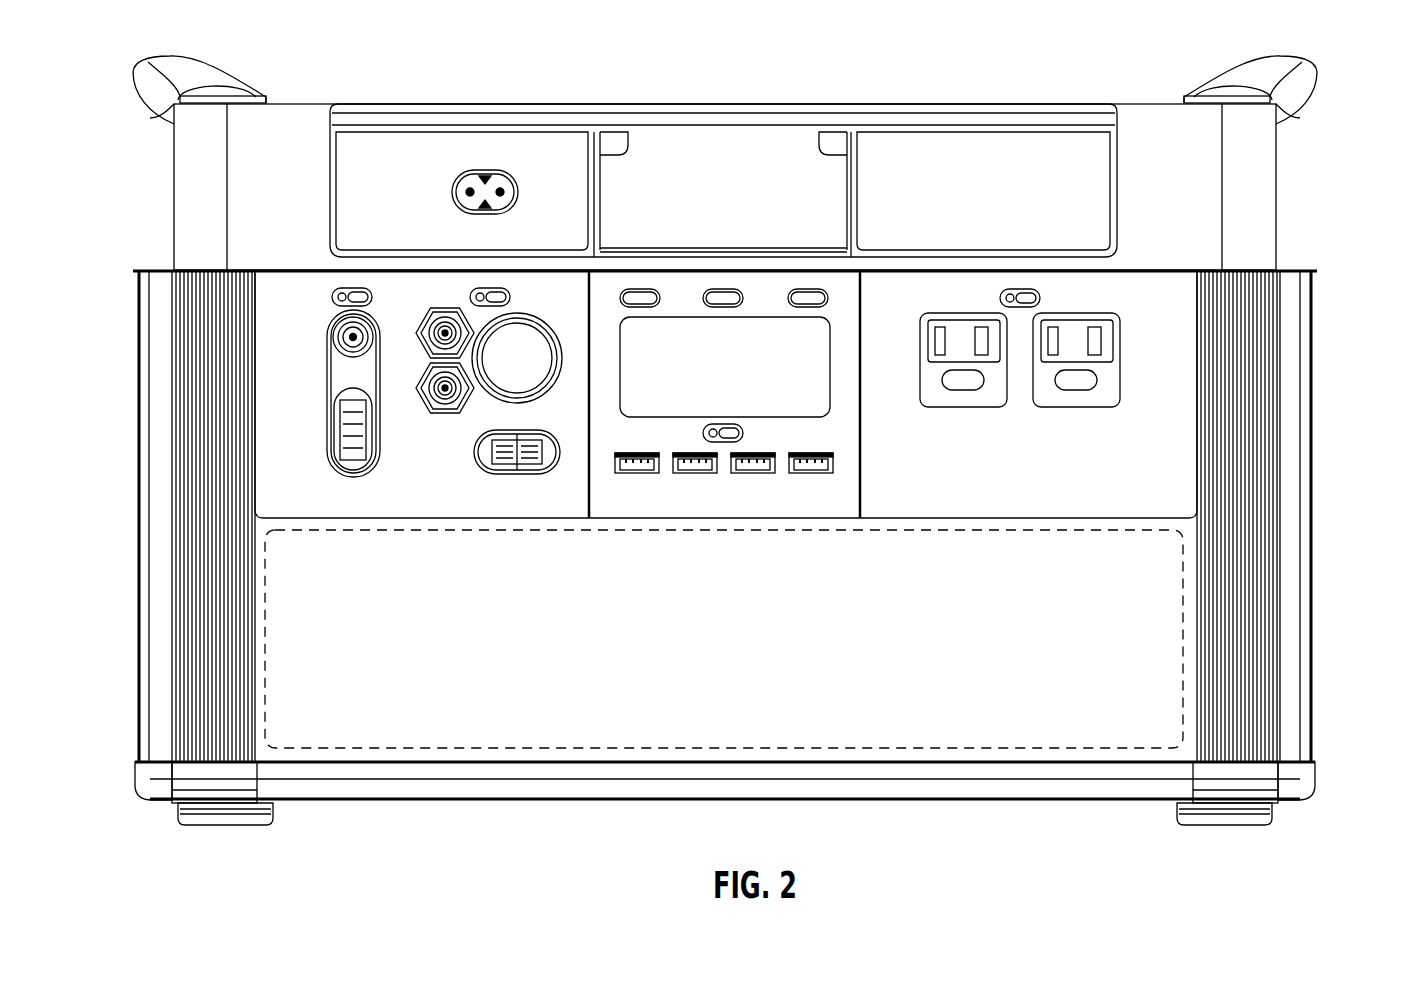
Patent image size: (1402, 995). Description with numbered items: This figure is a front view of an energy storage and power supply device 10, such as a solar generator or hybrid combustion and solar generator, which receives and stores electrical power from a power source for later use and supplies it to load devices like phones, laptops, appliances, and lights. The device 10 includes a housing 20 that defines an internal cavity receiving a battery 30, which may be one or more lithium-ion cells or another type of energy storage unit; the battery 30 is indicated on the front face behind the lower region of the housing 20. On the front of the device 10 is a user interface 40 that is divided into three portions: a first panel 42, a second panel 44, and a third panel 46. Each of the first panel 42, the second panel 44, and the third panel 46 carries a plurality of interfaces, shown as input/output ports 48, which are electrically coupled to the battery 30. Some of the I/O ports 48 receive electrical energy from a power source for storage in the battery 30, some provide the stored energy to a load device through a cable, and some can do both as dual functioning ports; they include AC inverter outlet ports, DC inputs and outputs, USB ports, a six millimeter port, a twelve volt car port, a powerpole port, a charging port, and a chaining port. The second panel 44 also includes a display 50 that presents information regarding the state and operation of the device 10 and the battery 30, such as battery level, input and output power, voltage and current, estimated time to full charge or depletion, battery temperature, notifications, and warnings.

The energy storage and power supply device 10 is at (1330, 31).
The housing 20 is at (138, 682).
The battery 30 is at (1045, 752).
The user interface 40 is at (1199, 398).
The first panel 42 is at (984, 505).
The second panel 44 is at (605, 503).
The third panel 46 is at (348, 500).
The input/output ports 48 is at (512, 178).
The display 50 is at (831, 395).